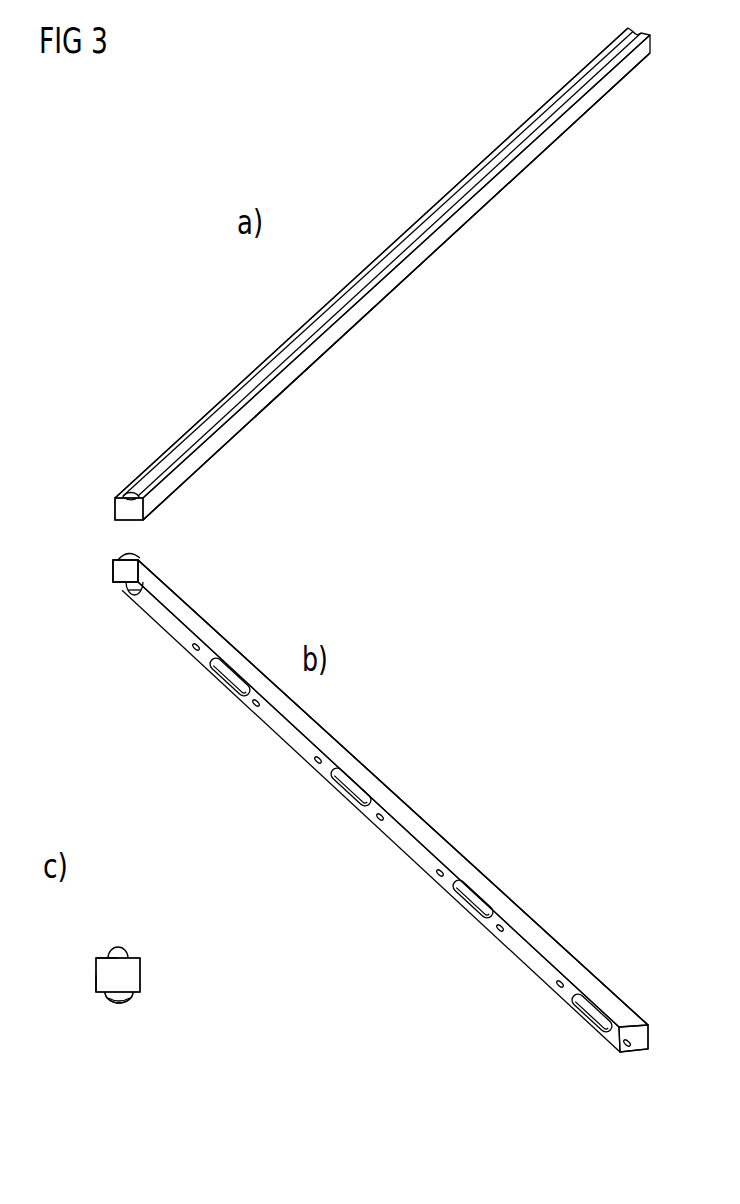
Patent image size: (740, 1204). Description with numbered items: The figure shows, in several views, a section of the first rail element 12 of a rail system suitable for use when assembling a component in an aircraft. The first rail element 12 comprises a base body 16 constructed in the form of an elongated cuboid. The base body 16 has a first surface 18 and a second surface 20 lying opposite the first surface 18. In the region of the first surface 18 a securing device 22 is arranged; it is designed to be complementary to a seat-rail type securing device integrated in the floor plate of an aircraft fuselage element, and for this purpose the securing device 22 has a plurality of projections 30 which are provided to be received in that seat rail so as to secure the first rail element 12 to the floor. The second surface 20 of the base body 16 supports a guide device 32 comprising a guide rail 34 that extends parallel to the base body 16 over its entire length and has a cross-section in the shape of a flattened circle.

The first rail element 12 is at (480, 150).
The base body 16 is at (497, 192).
The first surface 18 is at (123, 520).
The second surface 20 is at (230, 438).
The securing device 22 is at (598, 1048).
The projections 30 is at (230, 688).
The guide device 32 is at (354, 274).
The guide rail 34 is at (256, 386).